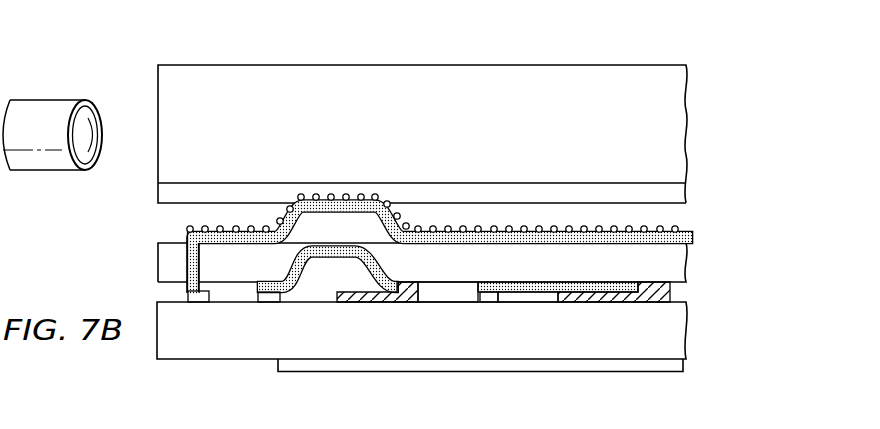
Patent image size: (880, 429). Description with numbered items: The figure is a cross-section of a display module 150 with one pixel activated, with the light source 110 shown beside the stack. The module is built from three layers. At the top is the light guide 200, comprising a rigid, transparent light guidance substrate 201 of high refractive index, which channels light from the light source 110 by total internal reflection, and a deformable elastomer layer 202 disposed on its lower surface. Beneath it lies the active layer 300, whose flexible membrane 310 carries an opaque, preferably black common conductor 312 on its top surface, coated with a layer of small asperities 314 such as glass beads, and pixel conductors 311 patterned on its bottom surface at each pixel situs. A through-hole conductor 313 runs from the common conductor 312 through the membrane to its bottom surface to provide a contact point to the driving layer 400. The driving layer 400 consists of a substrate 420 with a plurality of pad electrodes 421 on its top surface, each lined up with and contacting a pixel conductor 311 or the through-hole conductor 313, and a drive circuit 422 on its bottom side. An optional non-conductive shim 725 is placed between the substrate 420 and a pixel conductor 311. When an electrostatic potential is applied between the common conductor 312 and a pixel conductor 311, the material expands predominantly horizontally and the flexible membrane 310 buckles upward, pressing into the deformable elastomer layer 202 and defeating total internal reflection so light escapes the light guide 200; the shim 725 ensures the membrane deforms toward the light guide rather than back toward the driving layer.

The light source 110 is at (43, 172).
The module 150 is at (52, 127).
The light guide 200 is at (487, 134).
The light guidance substrate 201 is at (688, 87).
The deformable elastomer layer 202 is at (452, 190).
The active layer 300 is at (461, 268).
The flexible membrane 310 is at (687, 268).
The pixel conductor 311 is at (525, 292).
The common conductor 312 is at (690, 241).
The through-hole conductor 313 is at (187, 256).
The small asperities 314 is at (675, 231).
The driving layer 400 is at (487, 335).
The substrate 420 is at (688, 325).
The pad electrode 421 is at (197, 302).
The drive circuit 422 is at (686, 367).
The non-conductive shim 725 is at (372, 295).